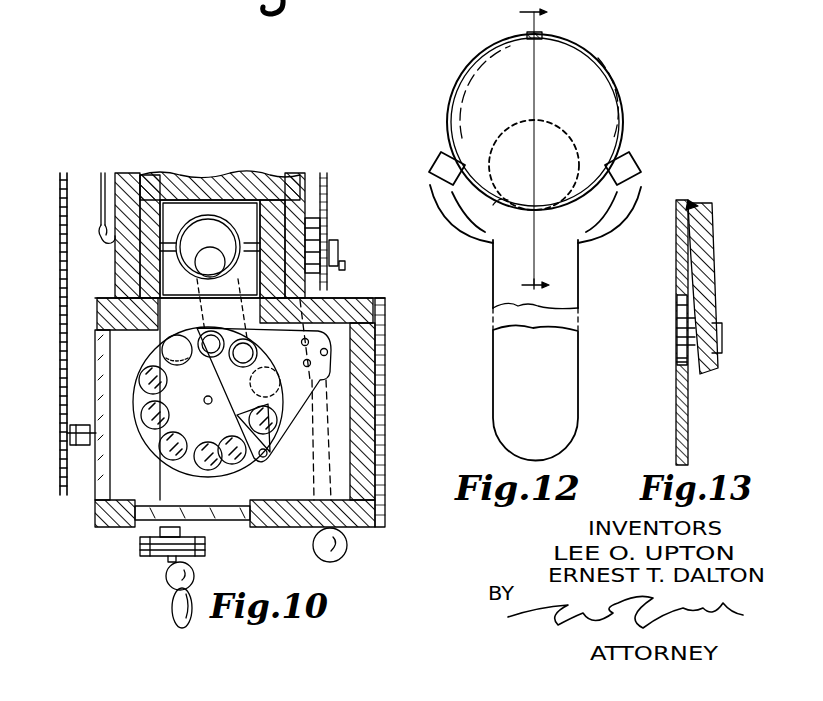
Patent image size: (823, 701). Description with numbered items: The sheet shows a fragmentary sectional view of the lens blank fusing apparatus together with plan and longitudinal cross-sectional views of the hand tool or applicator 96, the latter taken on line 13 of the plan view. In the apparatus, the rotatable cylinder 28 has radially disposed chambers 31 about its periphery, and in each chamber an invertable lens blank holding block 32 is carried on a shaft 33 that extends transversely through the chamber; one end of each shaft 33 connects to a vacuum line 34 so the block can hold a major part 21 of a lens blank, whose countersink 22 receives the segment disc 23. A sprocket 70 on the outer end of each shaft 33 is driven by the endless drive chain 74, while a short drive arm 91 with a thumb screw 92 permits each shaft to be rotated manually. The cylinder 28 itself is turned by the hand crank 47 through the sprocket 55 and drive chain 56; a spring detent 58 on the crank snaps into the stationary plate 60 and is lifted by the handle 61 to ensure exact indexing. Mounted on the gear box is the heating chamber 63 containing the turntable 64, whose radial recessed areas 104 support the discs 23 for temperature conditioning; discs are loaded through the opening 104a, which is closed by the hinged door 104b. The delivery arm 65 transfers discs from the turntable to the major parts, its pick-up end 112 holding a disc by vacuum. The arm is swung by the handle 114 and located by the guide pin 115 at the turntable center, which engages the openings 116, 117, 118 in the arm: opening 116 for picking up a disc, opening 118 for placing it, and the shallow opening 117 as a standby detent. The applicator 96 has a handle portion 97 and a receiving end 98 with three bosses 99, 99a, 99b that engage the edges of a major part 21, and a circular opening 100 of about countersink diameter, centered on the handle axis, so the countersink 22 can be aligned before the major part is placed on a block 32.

In FIG. 12, the section line 13— 13 is at (522, 150).
In FIG. 10, the major part 21 is at (200, 226).
In FIG. 12, the major part 21 is at (598, 80).
In FIG. 13, the major part 21 is at (705, 264).
In FIG. 10, the countersink 22 is at (214, 260).
In FIG. 12, the countersink 22 is at (547, 130).
In FIG. 13, the countersink 22 is at (684, 326).
In FIG. 10, the segment part or disc 23 is at (156, 390).
In FIG. 10, the cylinder 28 is at (290, 175).
In FIG. 10, the chambers 31 is at (232, 204).
In FIG. 10, the lens blank holding block 32 is at (214, 202).
In FIG. 10, the shaft 33 is at (172, 240).
In FIG. 10, the vacuum line 34 is at (101, 204).
In FIG. 10, the hand crank 47 is at (172, 601).
In FIG. 10, the sprocket 55 is at (70, 433).
In FIG. 10, the drive chain 56 is at (60, 379).
In FIG. 10, the spring detent 58 is at (184, 554).
In FIG. 10, the stationary plate 60 is at (139, 548).
In FIG. 10, the handle 61 is at (194, 576).
In FIG. 10, the heating chamber 63 is at (86, 511).
In FIG. 10, the turntable 64 is at (269, 434).
In FIG. 10, the delivery arm 65 is at (219, 282).
In FIG. 10, the sprocket 70 is at (321, 233).
In FIG. 10, the endless drive chain 74 is at (328, 193).
In FIG. 10, the drive arm 91 is at (338, 251).
In FIG. 10, the thumb screw 92 is at (346, 267).
In FIG. 12, the hand tool or applicator 96 is at (593, 266).
In FIG. 12, the handle portion 97 is at (572, 377).
In FIG. 13, the handle portion 97 is at (689, 402).
In FIG. 12, the lens blank receiving and supporting end 98 is at (624, 198).
In FIG. 12, the locating and supporting boss 99 is at (540, 36).
In FIG. 13, the locating and supporting boss 99 is at (694, 204).
In FIG. 12, the locating and supporting boss 99a is at (626, 164).
In FIG. 13, the locating and supporting boss 99a is at (720, 328).
In FIG. 12, the locating and supporting boss 99b is at (434, 160).
In FIG. 12, the circular opening 100 is at (500, 201).
In FIG. 13, the circular opening 100 is at (678, 360).
In FIG. 10, the recessed areas 104 is at (210, 379).
In FIG. 10, the opening 104a is at (385, 331).
In FIG. 10, the hinged door 104b is at (362, 413).
In FIG. 10, the end of the arm 112 is at (148, 326).
In FIG. 10, the handle 114 is at (347, 547).
In FIG. 10, the locating and guide pin 115 is at (201, 402).
In FIG. 10, the opening 116 is at (213, 397).
In FIG. 10, the opening 117 is at (204, 425).
In FIG. 10, the opening 118 is at (263, 462).